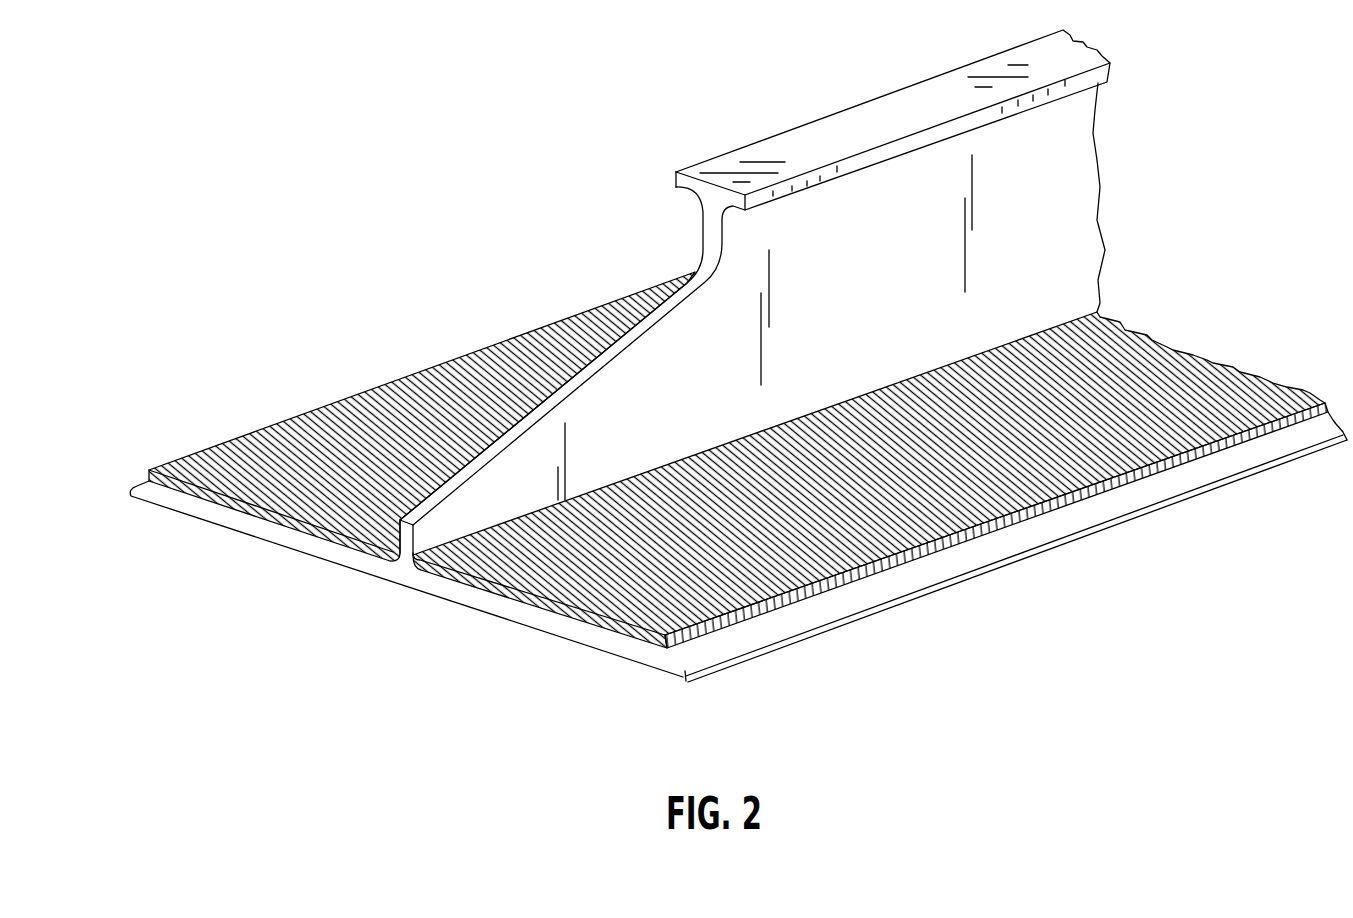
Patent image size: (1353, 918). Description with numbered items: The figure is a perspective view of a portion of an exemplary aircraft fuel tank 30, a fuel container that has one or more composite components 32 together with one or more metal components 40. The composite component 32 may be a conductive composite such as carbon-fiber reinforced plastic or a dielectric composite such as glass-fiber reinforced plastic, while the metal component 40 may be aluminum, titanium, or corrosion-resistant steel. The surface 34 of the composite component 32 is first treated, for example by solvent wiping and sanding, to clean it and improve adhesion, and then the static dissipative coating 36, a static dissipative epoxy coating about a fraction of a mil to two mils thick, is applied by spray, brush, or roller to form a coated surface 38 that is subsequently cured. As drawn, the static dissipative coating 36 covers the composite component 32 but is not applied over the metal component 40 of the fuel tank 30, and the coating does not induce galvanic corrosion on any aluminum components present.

The aircraft fuel tank 30 is at (548, 170).
The composite component 32 is at (143, 468).
The surface 34 is at (235, 512).
The static dissipative coating 36 is at (650, 630).
The coated surface 38 is at (322, 430).
The metal component 40 is at (768, 150).